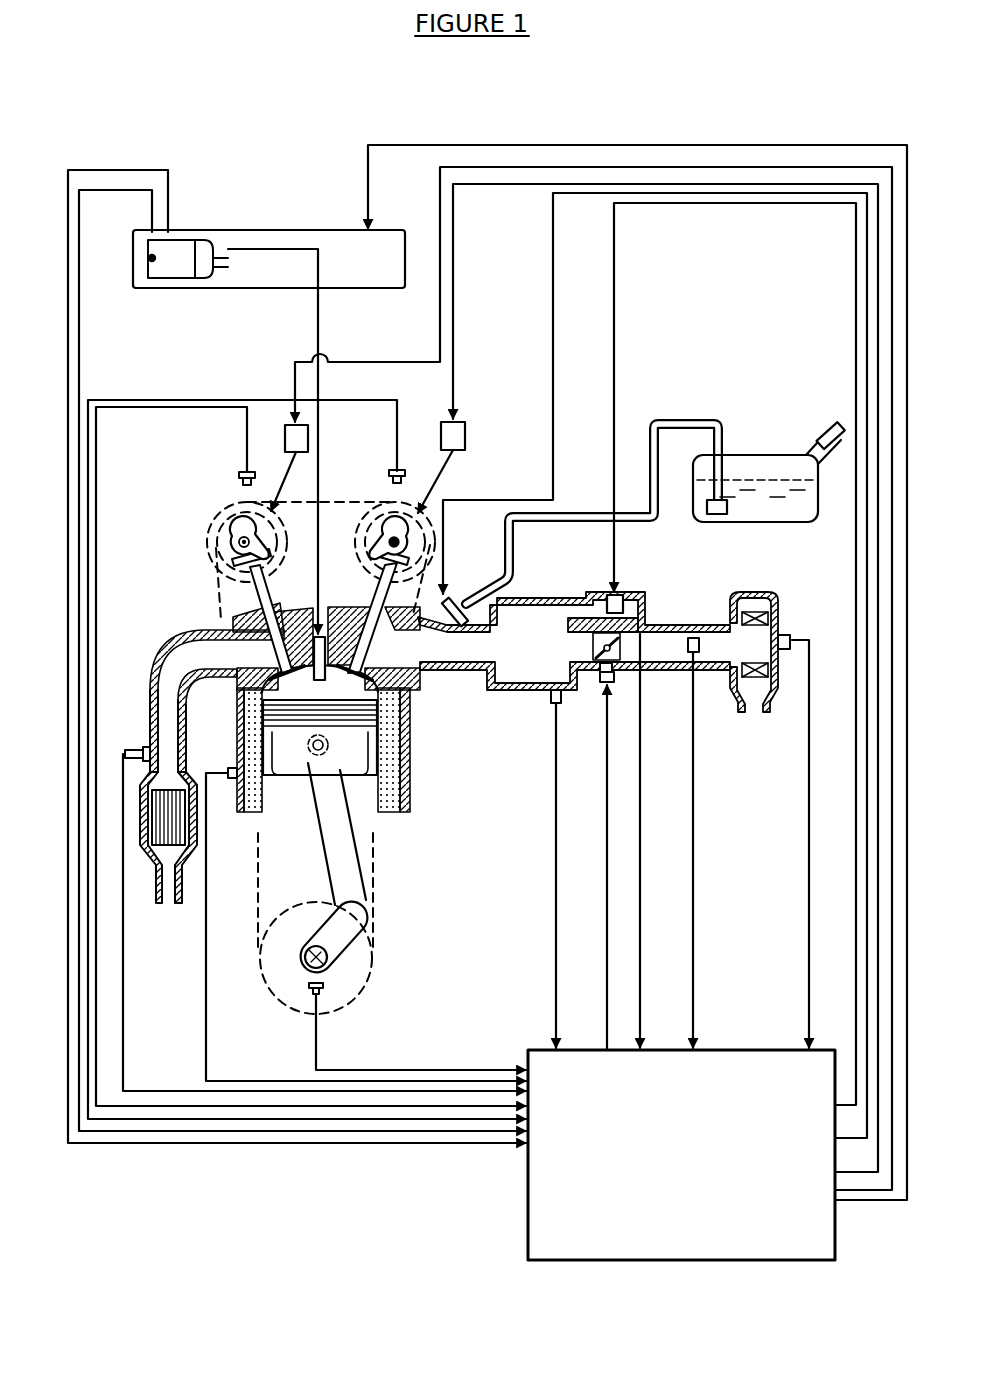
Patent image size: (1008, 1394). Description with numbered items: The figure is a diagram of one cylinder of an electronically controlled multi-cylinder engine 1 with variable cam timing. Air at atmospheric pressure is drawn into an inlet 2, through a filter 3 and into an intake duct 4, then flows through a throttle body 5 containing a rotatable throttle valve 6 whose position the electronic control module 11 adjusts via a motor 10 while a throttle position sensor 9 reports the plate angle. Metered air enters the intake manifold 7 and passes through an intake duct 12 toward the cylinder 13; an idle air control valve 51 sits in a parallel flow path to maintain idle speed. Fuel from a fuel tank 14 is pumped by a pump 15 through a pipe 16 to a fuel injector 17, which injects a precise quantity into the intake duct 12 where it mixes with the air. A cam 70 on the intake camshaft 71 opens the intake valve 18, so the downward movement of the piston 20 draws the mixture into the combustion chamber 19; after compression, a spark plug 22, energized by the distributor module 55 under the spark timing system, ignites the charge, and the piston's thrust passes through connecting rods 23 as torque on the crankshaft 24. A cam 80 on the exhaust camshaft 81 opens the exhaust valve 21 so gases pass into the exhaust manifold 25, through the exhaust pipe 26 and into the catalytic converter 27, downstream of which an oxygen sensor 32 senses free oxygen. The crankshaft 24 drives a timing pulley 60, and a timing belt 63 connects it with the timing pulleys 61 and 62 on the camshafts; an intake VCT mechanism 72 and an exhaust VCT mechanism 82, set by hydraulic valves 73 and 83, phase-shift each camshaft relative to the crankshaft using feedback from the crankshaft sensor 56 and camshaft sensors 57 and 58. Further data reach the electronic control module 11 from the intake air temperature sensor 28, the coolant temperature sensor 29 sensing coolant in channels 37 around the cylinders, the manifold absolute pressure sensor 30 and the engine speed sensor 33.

The engine 1 is at (138, 581).
The inlet 2 is at (757, 713).
The filter 3 is at (775, 591).
The intake duct 4 is at (657, 640).
The throttle body 5 is at (592, 673).
The throttle valve 6 is at (597, 650).
The intake manifold 7 is at (507, 679).
The throttle position sensor 9 is at (648, 626).
The motor 10 is at (611, 686).
The electronic control module 11 is at (528, 1257).
The intake duct 12 is at (453, 648).
The cylinder 13 is at (418, 749).
The fuel tank 14 is at (776, 455).
The pump 15 is at (722, 516).
The pipe 16 is at (694, 420).
The fuel injector 17 is at (458, 595).
The intake valve 18 is at (367, 650).
The combustion chamber 19 is at (382, 705).
The piston 20 is at (288, 757).
The exhaust valve 21 is at (272, 654).
The spark plug 22 is at (316, 634).
The connecting rods 23 is at (334, 858).
The crankshaft 24 is at (305, 957).
The exhaust manifold 25 is at (172, 672).
The exhaust pipe 26 is at (178, 714).
The catalytic converter 27 is at (173, 790).
The intake air temperature sensor 28 is at (688, 661).
The coolant temperature sensor 29 is at (236, 780).
The manifold absolute pressure sensor 30 is at (550, 704).
The oxygen sensor 32 is at (146, 749).
The engine speed sensor 33 is at (149, 259).
The channels 37 is at (396, 813).
The idle air control valve 51 is at (605, 593).
The distributor module 55 is at (181, 252).
The crankshaft sensor 56 is at (311, 991).
The camshaft sensor 57 is at (396, 470).
The camshaft sensor 58 is at (244, 473).
The timing pulley 60 is at (368, 983).
The timing pulley 61 is at (360, 533).
The timing pulley 62 is at (207, 540).
The timing belt 63 is at (216, 608).
The cam 70 is at (390, 525).
The intake camshaft 71 is at (380, 548).
The intake VCT mechanism 72 is at (422, 530).
The valve 73 is at (459, 421).
The cam 80 is at (246, 528).
The camshaft 81 is at (234, 546).
The exhaust VCT mechanism 82 is at (282, 533).
The valve 83 is at (286, 424).